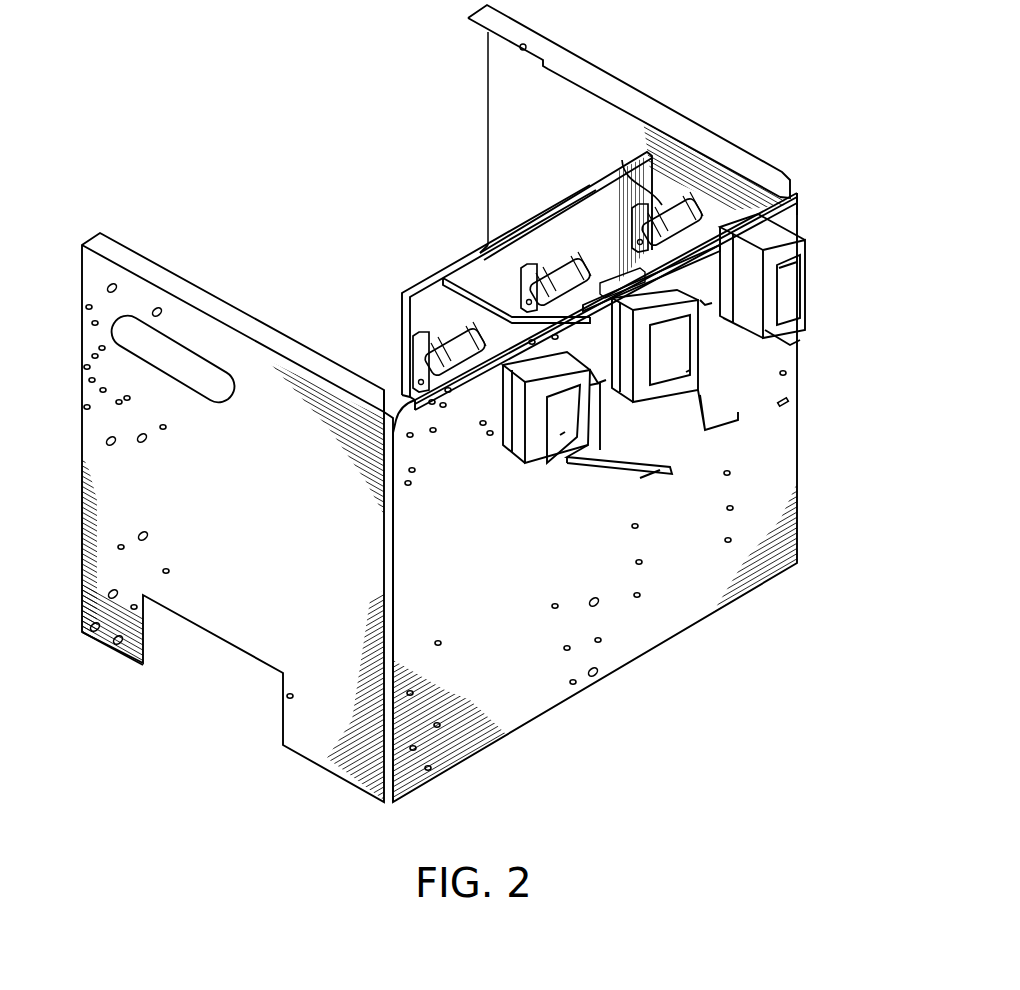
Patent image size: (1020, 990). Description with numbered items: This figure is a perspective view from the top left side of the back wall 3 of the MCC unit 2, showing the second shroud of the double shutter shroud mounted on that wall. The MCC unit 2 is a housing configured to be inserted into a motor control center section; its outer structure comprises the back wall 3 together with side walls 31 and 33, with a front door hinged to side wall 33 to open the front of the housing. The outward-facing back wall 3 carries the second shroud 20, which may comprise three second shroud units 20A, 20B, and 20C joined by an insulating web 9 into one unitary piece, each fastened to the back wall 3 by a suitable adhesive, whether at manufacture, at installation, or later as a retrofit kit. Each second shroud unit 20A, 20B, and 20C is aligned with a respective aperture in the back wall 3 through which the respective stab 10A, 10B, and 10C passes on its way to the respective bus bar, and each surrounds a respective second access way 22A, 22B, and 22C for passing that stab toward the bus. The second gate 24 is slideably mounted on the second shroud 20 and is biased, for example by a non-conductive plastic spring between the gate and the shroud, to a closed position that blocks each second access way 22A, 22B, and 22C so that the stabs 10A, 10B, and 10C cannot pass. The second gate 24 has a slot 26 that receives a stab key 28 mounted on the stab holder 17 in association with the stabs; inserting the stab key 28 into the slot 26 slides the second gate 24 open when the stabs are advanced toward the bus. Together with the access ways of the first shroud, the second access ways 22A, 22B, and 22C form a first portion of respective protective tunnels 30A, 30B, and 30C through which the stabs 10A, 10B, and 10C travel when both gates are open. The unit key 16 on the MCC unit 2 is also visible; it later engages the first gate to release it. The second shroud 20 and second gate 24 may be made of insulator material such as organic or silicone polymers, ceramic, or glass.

The MCC unit 2 is at (220, 163).
The back wall 3 is at (512, 690).
The insulating web 9 is at (707, 307).
The stab 10A is at (680, 205).
The stab 10B is at (565, 278).
The stab 10C is at (410, 333).
The unit key 16 is at (650, 482).
The stab holder 17 is at (622, 160).
The second shroud 20 is at (799, 190).
The second shroud unit 20A is at (797, 332).
The second shroud unit 20B is at (708, 428).
The second shroud unit 20C is at (527, 464).
The second access way 22A is at (800, 295).
The second access way 22B is at (682, 370).
The second access way 22C is at (575, 398).
The second gate 24 is at (783, 268).
The slot 26 is at (578, 308).
The stab key 28 is at (487, 282).
The protective tunnel 30A is at (585, 171).
The protective tunnel 30B is at (475, 217).
The protective tunnel 30C is at (396, 266).
The side wall 31 is at (225, 604).
The side wall 33 is at (502, 52).